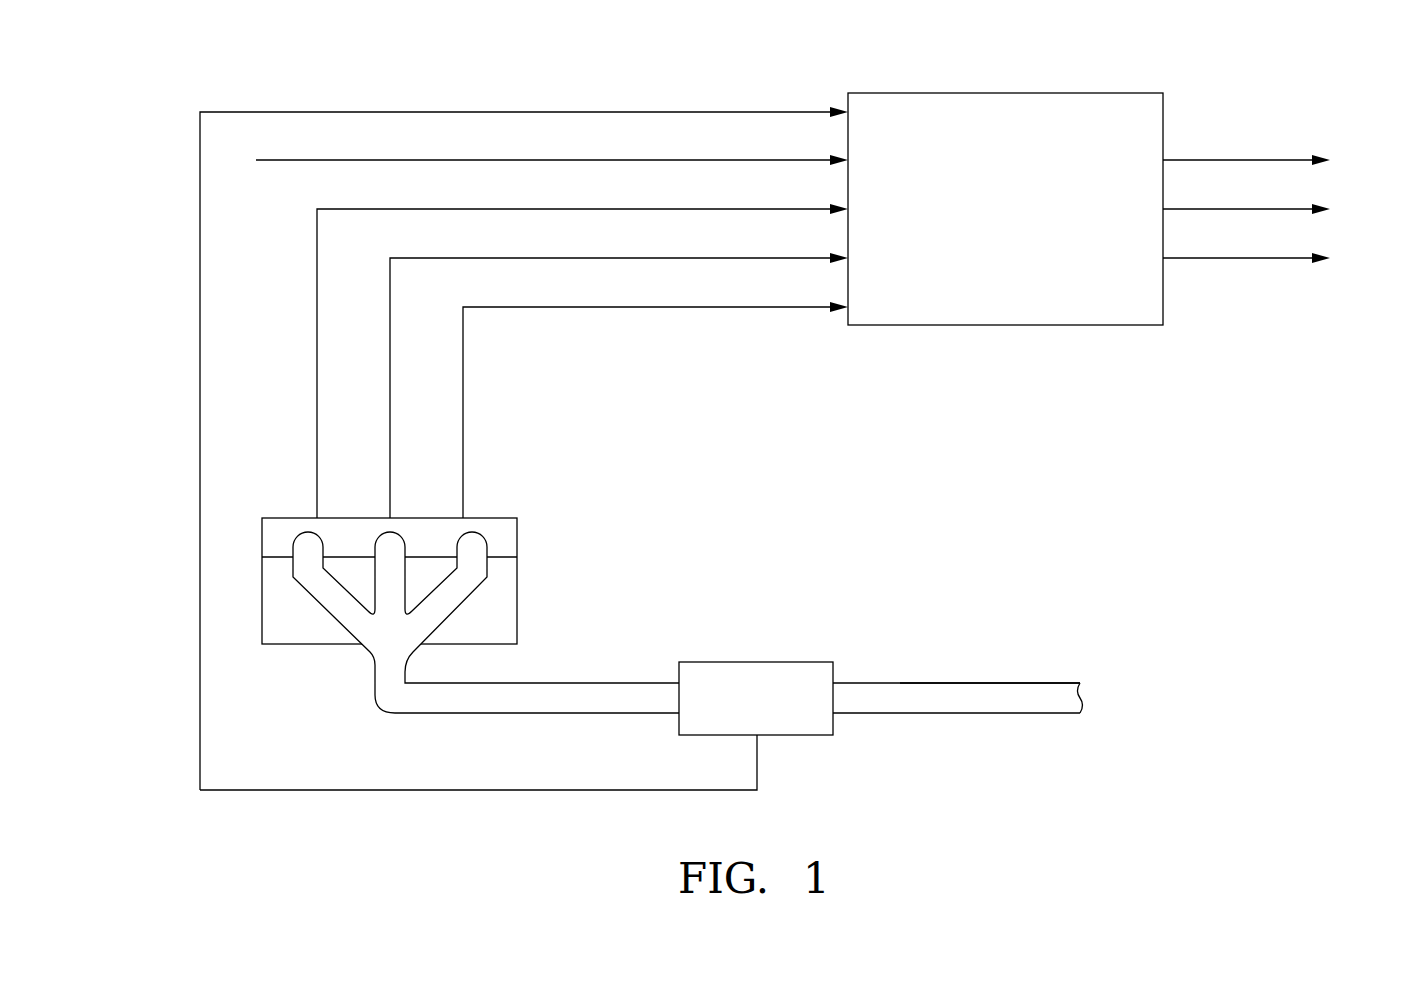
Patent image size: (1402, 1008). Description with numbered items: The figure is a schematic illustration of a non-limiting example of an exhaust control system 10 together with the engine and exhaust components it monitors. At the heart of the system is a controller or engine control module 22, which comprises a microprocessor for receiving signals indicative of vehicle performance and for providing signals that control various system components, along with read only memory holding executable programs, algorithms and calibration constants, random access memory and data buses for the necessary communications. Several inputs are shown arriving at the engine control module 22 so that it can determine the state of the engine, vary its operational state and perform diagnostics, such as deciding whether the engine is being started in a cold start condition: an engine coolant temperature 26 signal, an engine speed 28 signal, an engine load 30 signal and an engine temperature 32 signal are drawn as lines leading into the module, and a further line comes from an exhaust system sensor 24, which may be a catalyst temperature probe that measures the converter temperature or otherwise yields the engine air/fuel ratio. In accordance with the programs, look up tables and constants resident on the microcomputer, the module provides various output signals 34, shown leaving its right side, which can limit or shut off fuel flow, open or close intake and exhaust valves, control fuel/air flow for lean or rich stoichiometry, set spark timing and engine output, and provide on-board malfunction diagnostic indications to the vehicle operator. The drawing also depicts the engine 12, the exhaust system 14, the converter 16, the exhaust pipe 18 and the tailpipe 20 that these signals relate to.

The exhaust control system 10 is at (997, 490).
The engine 12 is at (490, 518).
The exhaust system 14 is at (900, 683).
The catalytic converter 16 is at (780, 662).
The exhaust manifold pipe 18 is at (530, 683).
The tailpipe 20 is at (1043, 687).
The engine control module 22 is at (1118, 93).
The exhaust system sensor 24 is at (200, 393).
The engine coolant temperature 26 is at (325, 162).
The engine speed 28 is at (317, 410).
The engine load 30 is at (390, 410).
The engine temperature 32 is at (463, 393).
The output signals 34 is at (1248, 160).